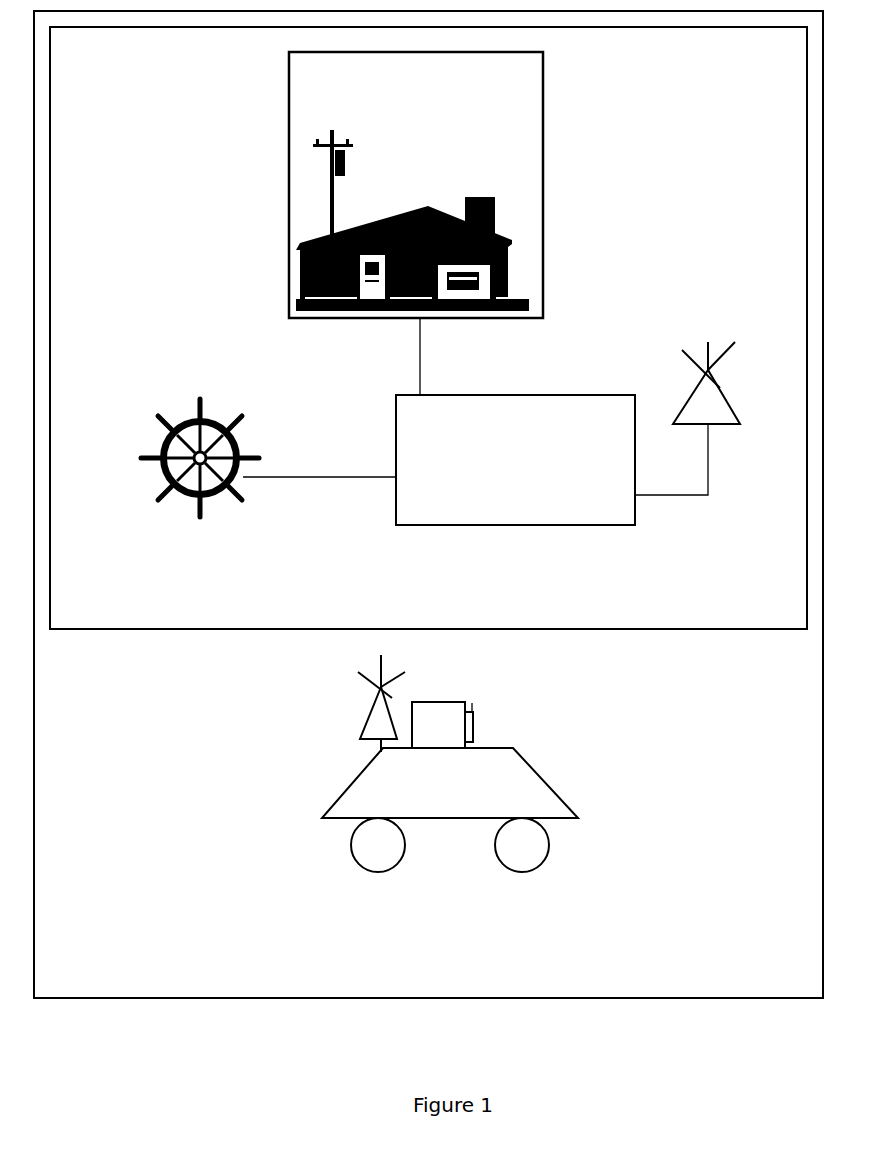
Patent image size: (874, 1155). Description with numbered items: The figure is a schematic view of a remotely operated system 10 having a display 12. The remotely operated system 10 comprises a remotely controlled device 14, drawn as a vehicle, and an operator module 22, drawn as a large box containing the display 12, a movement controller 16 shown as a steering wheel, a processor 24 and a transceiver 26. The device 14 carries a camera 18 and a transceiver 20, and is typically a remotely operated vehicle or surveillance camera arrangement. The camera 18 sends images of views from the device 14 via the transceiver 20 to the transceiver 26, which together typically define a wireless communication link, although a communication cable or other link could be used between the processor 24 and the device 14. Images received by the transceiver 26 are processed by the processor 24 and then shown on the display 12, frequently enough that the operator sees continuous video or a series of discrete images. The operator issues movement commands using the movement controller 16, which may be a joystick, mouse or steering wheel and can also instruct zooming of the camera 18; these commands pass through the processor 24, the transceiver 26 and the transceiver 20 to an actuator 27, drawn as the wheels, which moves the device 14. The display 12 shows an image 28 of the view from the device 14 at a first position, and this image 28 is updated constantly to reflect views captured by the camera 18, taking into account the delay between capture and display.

The remotely operated system 10 is at (150, 938).
The display 12 is at (545, 226).
The remotely controlled device 14 is at (557, 777).
The movement controller 16 is at (222, 410).
The camera 18 is at (476, 711).
The transceiver 20 is at (353, 712).
The operator module 22 is at (401, 610).
The processor 24 is at (501, 494).
The transceiver 26 is at (687, 392).
The actuator 27 is at (557, 848).
The image 28 is at (457, 194).